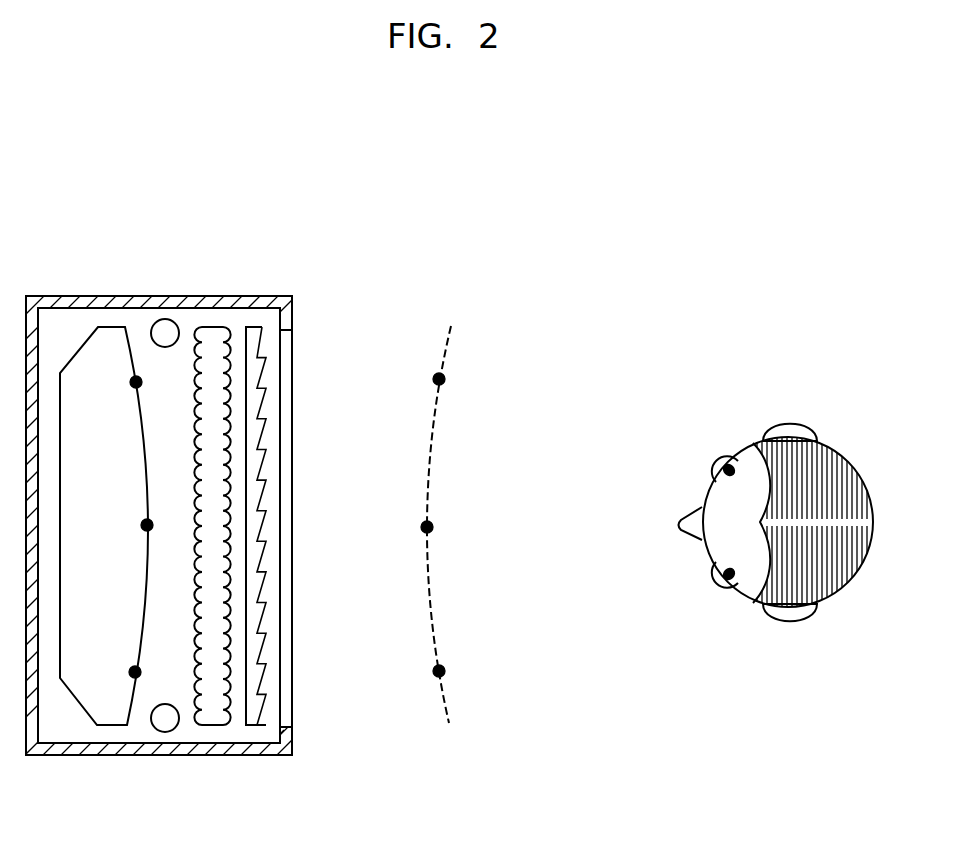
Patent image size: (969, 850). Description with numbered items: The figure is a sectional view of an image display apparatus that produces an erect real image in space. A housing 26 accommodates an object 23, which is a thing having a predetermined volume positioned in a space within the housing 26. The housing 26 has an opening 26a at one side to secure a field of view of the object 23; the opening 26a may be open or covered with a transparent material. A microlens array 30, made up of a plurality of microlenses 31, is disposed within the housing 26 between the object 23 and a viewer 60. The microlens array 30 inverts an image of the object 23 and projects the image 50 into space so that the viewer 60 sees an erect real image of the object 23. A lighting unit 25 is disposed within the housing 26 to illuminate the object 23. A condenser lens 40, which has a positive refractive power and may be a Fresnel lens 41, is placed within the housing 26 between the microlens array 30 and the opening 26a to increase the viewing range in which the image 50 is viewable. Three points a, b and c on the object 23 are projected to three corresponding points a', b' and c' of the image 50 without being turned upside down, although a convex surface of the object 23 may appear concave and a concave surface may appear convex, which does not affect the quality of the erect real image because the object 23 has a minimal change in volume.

The object 23 is at (117, 327).
The lighting unit 25 is at (166, 319).
The housing 26 is at (80, 297).
The opening 26a is at (290, 420).
The microlens array 30 is at (214, 327).
The microlenses 31 is at (227, 722).
The condenser lens 40 is at (254, 327).
The Fresnel lens 41 is at (262, 337).
The image 50 is at (444, 356).
The viewer 60 is at (792, 422).